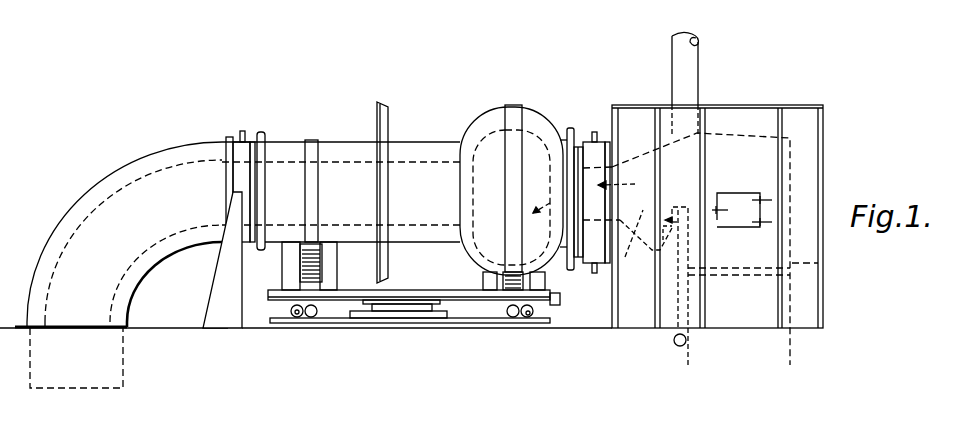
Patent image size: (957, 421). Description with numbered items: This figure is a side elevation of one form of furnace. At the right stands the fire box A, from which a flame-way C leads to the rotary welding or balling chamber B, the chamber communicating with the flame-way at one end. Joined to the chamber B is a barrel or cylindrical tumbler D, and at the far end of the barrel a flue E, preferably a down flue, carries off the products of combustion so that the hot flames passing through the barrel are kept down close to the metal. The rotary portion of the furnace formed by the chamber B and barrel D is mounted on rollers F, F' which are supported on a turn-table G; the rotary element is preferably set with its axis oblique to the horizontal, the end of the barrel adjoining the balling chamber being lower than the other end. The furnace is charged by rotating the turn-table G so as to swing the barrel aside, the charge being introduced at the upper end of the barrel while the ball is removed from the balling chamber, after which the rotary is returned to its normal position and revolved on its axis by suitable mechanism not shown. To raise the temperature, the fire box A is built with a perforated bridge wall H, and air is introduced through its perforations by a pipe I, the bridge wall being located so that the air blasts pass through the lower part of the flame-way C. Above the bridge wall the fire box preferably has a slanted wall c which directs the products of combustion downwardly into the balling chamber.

The fire box A is at (757, 120).
The rotary welding chamber B is at (540, 127).
The flame-way C is at (645, 241).
The slanted wall c is at (645, 156).
The barrel D is at (345, 160).
The flue E is at (137, 172).
The rollers F is at (295, 266).
The rollers F' is at (507, 311).
The turn-table G is at (407, 297).
The bridge wall H is at (683, 206).
The pipe I is at (675, 345).